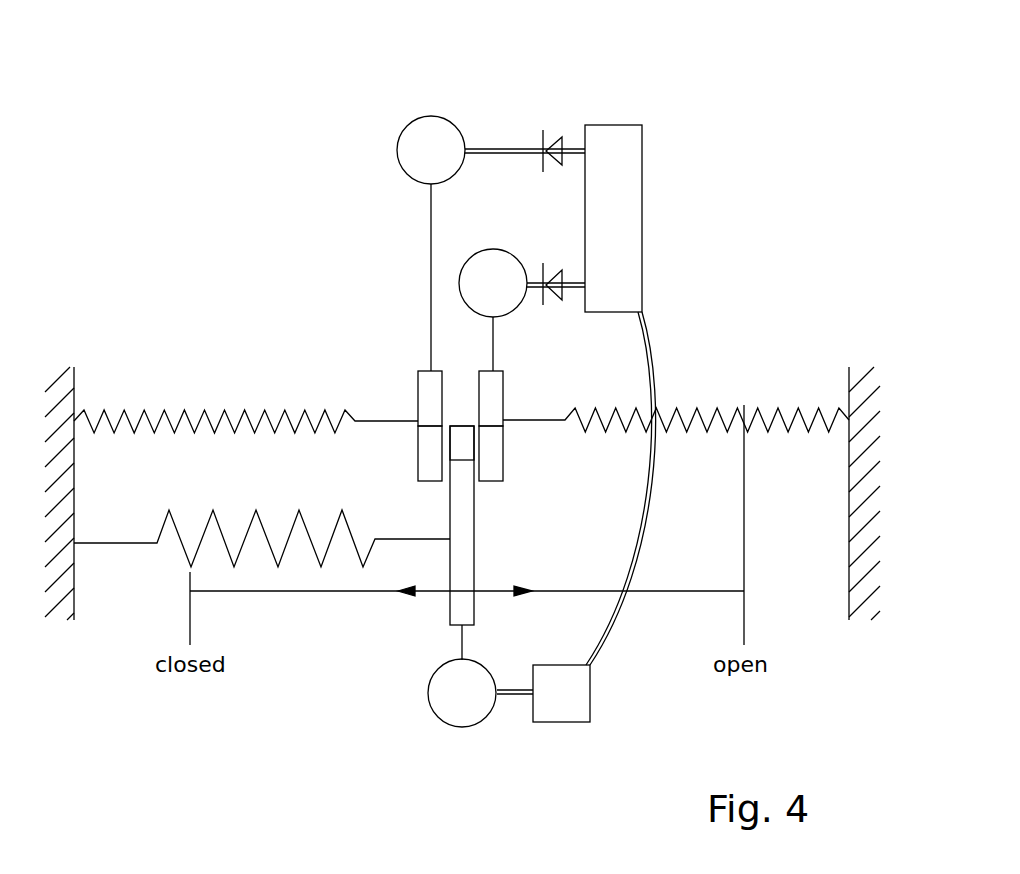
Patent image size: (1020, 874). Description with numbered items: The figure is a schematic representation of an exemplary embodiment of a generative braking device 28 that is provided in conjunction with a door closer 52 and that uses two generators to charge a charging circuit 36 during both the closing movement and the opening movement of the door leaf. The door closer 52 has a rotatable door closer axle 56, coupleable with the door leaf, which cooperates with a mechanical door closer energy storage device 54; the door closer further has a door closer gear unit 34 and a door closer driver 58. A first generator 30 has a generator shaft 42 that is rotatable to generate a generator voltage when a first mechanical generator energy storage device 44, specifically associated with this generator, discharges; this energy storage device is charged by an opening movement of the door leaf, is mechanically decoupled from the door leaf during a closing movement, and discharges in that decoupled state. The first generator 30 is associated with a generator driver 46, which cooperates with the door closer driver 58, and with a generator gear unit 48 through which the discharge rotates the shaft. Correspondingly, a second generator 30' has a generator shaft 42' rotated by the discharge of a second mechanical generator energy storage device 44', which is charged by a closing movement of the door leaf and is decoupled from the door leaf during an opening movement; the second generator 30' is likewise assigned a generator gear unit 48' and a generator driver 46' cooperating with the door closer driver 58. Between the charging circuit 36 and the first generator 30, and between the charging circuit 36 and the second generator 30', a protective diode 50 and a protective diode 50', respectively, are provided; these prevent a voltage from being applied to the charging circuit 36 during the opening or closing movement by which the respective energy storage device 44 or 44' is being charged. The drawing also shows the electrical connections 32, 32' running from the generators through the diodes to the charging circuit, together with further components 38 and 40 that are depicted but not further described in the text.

The generative braking device 28 is at (531, 115).
The second generator 30' is at (428, 117).
The first generator 30 is at (488, 252).
The second supply line 32' is at (520, 101).
The first supply line 32 is at (546, 237).
The door closer gear unit 34 is at (465, 575).
The charging circuit 36 is at (615, 140).
The power supply 38 is at (563, 702).
The motor 40 is at (466, 705).
The generator shaft 42' is at (381, 277).
The generator shaft 42 is at (544, 344).
The second mechanical generator energy storage device 44' is at (246, 384).
The first mechanical generator energy storage device 44 is at (676, 384).
The generator driver 46' is at (387, 453).
The generator driver 46 is at (537, 453).
The generator gear unit 48' is at (387, 398).
The generator gear unit 48 is at (537, 398).
The protective diode 50' is at (566, 111).
The protective diode 50 is at (562, 246).
The door closer 52 is at (170, 360).
The mechanical door closer energy storage device 54 is at (222, 530).
The door closer axle 56 is at (462, 501).
The door closer driver 58 is at (463, 436).